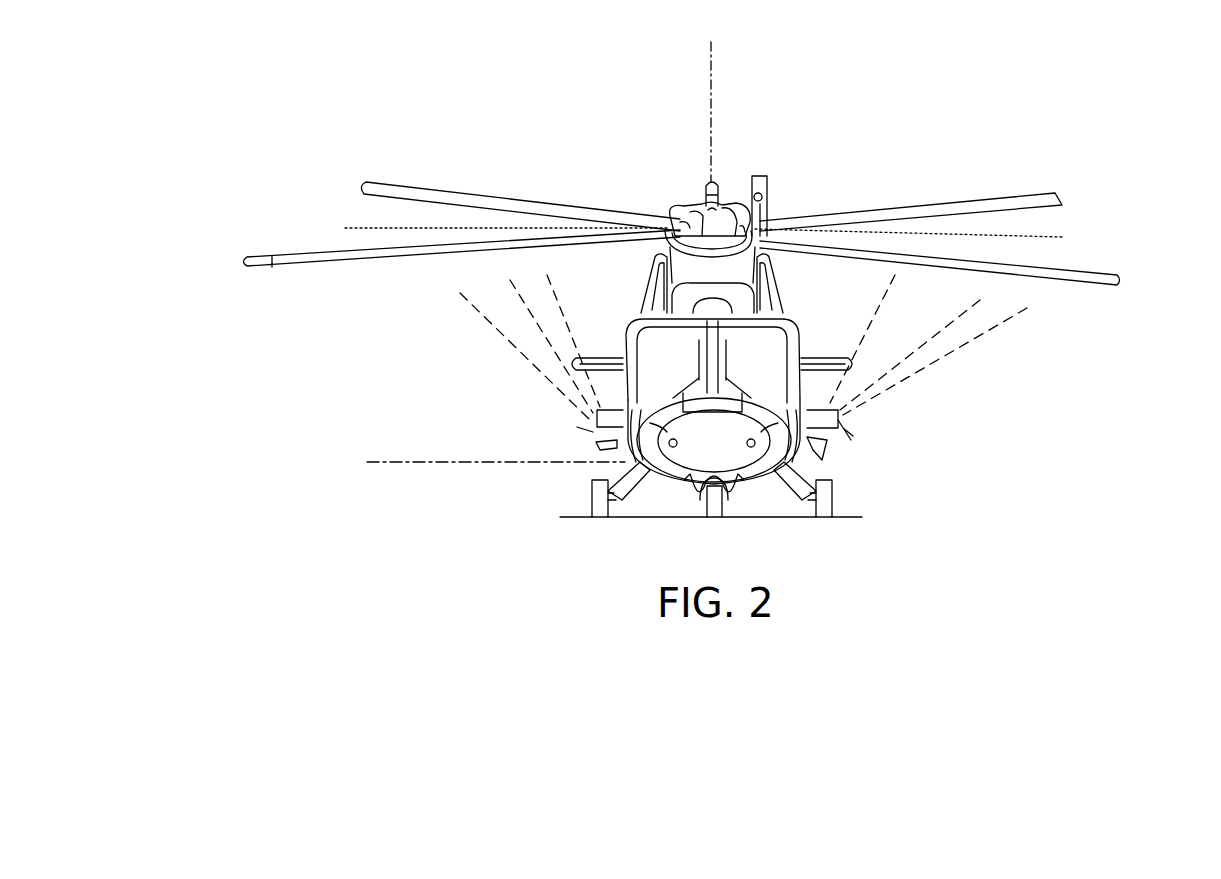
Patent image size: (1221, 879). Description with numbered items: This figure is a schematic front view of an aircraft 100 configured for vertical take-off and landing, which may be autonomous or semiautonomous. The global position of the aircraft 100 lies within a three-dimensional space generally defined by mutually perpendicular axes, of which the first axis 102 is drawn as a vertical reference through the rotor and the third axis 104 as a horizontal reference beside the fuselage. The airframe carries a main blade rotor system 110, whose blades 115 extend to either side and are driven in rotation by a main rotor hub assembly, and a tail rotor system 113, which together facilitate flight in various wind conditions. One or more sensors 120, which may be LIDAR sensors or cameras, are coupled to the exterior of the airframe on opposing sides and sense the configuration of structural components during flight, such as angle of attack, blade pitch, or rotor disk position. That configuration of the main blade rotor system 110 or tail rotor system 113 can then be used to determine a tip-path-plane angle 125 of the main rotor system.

The aircraft 100 is at (288, 207).
The first axis 102 is at (715, 58).
The third axis 104 is at (458, 464).
The main blade rotor system 110 is at (692, 208).
The tail rotor system 113 is at (764, 193).
The blades 115 is at (503, 197).
The sensors 120 is at (594, 430).
The tip-path-plane angle 125 is at (464, 226).